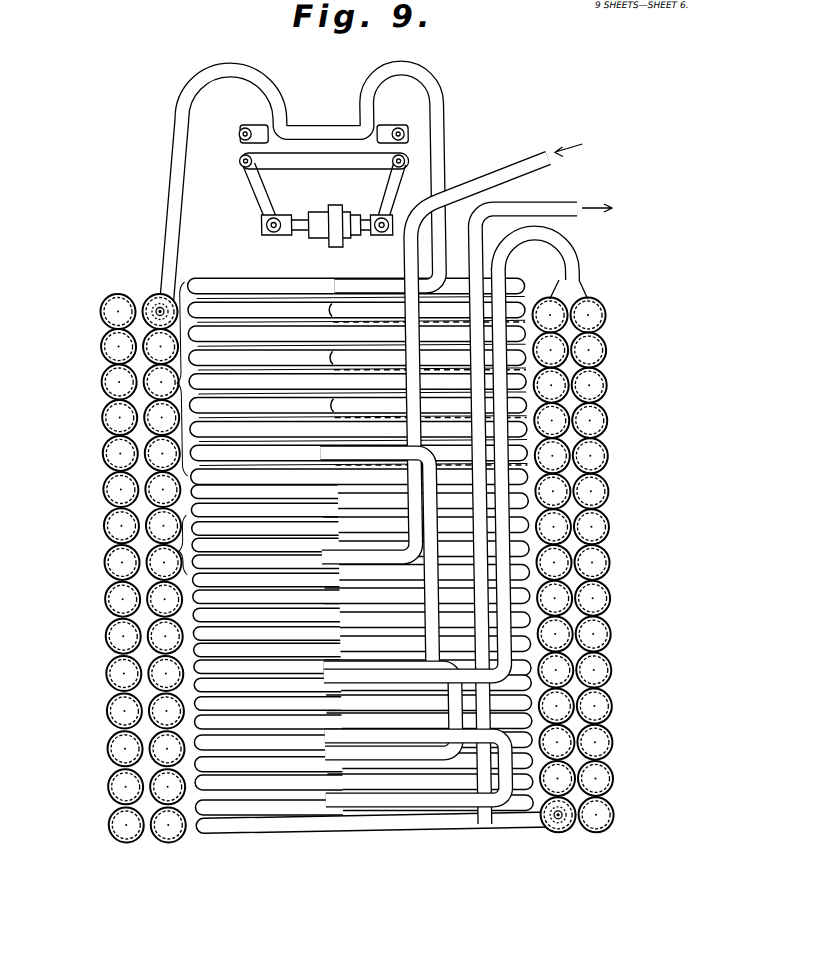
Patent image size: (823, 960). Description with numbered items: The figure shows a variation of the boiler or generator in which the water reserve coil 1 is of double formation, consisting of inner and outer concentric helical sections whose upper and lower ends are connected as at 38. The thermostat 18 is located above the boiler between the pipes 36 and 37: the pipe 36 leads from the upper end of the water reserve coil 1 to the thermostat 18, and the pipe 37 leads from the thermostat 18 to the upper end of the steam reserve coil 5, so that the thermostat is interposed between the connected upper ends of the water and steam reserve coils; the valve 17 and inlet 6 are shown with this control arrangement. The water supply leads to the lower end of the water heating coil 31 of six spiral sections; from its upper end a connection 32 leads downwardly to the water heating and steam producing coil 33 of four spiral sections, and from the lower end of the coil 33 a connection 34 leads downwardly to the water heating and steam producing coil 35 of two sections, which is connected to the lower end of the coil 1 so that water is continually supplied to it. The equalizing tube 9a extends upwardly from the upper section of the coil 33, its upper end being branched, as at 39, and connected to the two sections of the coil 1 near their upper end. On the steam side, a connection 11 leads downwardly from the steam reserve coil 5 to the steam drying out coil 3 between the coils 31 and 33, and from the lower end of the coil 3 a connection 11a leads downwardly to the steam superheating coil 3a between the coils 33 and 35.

The water reserve coil 1 is at (99, 578).
The steam drying out coil 3 is at (550, 626).
The steam superheating coil 3a is at (175, 790).
The steam reserve coil 5 is at (98, 378).
The inlet pipe 6 is at (513, 172).
The equalizing tube 9a is at (496, 264).
The connection 11 is at (592, 491).
The connection 11a is at (448, 743).
The valve 17 is at (308, 240).
The thermostat 18 is at (320, 124).
The water heating coil 31 is at (102, 512).
The connection 32 is at (429, 660).
The water heating and steam producing coil 33 is at (117, 703).
The connection 34 is at (494, 787).
The water heating and steam producing coil 35 is at (252, 803).
The pipe 36 is at (176, 134).
The pipe 37 is at (440, 104).
The connection of coil ends 38 is at (145, 294).
The branch 39 is at (577, 293).